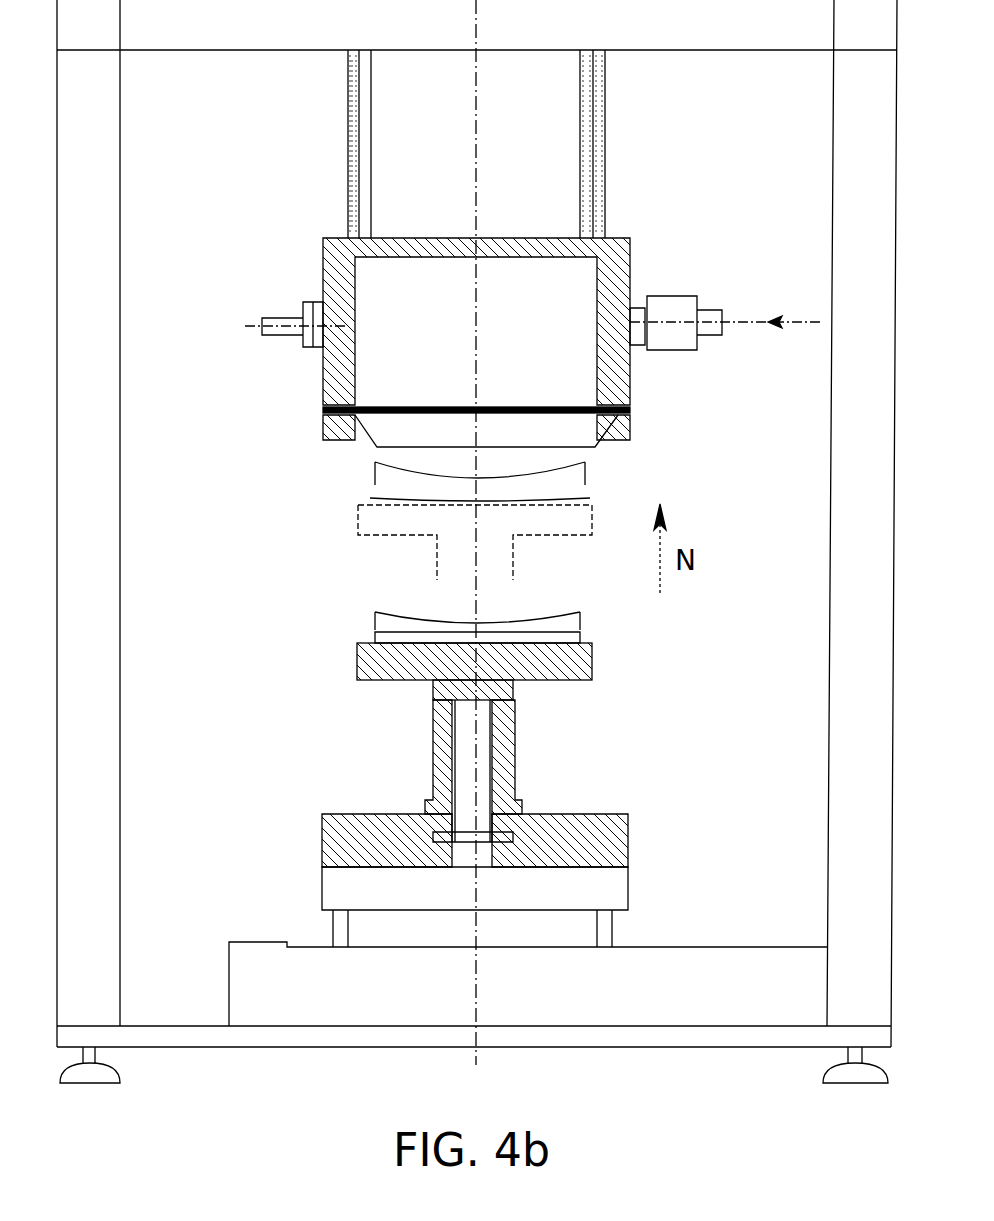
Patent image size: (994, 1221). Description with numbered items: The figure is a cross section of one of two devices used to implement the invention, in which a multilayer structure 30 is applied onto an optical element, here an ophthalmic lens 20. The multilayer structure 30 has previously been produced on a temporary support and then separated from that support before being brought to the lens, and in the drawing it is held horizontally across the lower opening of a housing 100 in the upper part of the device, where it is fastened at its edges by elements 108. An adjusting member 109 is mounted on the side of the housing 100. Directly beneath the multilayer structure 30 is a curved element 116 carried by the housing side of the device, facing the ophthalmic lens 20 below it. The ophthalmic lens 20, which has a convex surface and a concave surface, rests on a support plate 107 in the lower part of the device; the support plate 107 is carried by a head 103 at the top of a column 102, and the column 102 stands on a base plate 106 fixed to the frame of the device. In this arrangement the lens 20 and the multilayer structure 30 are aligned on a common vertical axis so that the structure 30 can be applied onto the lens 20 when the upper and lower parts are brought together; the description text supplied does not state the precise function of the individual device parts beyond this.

The housing 100 is at (437, 311).
The adjusting screw 109 is at (679, 306).
The multilayer structure 30 is at (322, 404).
The fastening nut 108 is at (322, 428).
The upper lens 116 is at (368, 434).
The ophthalmic lens 20 is at (376, 612).
The support plate 107 is at (357, 640).
The stem head 103 is at (433, 698).
The column 102 is at (430, 793).
The base plate 106 is at (320, 826).